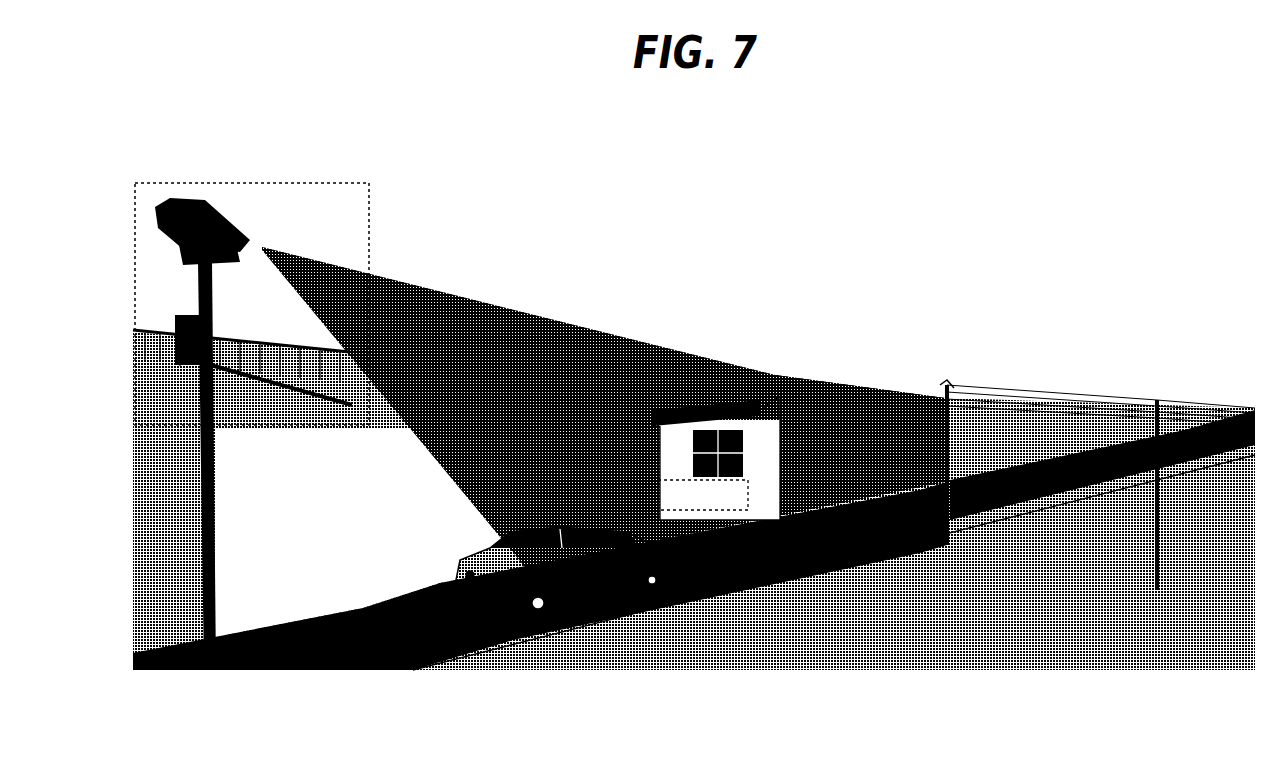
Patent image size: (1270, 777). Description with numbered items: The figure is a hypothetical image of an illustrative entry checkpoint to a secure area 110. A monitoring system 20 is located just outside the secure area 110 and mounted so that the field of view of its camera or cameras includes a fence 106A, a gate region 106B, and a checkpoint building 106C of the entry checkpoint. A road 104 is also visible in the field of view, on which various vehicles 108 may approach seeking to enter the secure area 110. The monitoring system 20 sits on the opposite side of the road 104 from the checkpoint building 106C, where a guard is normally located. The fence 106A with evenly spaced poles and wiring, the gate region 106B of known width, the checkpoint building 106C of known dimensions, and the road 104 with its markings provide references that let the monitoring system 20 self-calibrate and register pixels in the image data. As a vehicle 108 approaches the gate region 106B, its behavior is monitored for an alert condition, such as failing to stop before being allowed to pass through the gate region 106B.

The secure area 110 is at (186, 130).
The monitoring system 20 is at (370, 226).
The road 104 is at (694, 542).
The fence 106A is at (1097, 485).
The gate region 106B is at (772, 449).
The checkpoint building 106C is at (716, 458).
The vehicle 108 is at (563, 571).